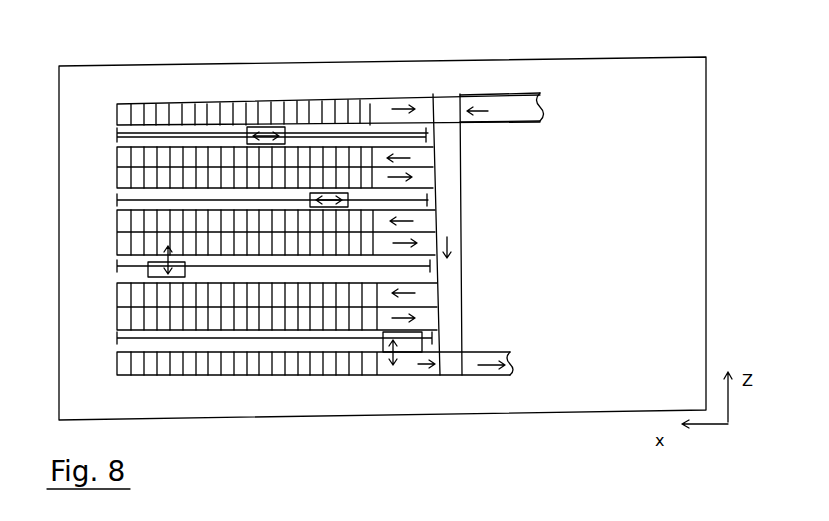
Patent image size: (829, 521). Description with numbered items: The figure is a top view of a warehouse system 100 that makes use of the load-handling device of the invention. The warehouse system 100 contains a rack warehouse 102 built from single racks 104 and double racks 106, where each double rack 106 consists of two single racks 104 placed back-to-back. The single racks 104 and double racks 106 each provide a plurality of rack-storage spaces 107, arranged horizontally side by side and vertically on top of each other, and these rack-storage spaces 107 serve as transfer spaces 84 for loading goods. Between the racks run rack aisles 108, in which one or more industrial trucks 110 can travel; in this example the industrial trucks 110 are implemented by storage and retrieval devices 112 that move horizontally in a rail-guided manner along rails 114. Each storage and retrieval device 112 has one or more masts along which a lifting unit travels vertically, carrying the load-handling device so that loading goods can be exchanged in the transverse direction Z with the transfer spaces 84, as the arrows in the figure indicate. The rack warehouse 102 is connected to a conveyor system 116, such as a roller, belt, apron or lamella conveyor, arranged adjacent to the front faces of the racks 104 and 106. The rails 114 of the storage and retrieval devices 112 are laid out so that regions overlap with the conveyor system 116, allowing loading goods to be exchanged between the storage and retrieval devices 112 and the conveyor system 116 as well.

The warehouse system 100 is at (678, 103).
The rack warehouse 102 is at (256, 82).
The single racks 104 is at (117, 118).
The double racks 106 is at (117, 180).
The rack-storage spaces 107 is at (143, 109).
The transfer spaces 84 is at (413, 370).
The rack aisles 108 is at (364, 125).
The industrial trucks 110 is at (286, 127).
The storage and retrieval devices 112 is at (411, 332).
The rails 114 is at (413, 197).
The conveyor system 116 is at (511, 115).